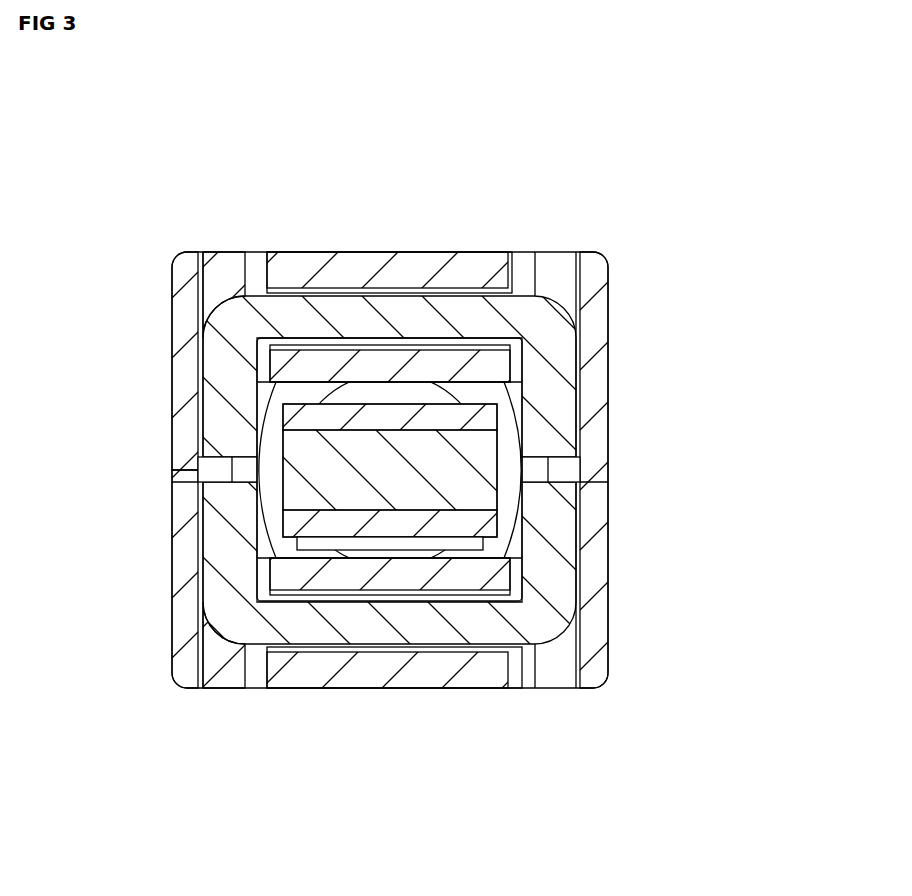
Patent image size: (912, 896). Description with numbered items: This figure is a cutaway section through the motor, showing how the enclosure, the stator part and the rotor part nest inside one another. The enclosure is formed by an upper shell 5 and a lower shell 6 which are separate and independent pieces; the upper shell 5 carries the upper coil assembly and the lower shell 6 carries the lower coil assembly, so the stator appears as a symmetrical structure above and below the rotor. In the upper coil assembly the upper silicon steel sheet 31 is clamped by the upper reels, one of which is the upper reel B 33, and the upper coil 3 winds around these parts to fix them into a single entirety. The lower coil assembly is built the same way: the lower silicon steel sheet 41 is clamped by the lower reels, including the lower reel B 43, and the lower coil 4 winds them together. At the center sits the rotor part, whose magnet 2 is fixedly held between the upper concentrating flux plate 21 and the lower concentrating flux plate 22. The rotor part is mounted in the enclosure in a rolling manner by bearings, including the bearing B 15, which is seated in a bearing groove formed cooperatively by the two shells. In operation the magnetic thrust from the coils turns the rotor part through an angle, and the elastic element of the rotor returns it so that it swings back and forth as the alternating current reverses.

The magnet 2 is at (402, 557).
The upper concentrating flux plate 21 is at (322, 418).
The lower concentrating flux plate 22 is at (457, 525).
The upper coil 3 is at (405, 273).
The upper silicon steel sheet 31 is at (548, 333).
The upper reel B 33 is at (225, 273).
The lower coil 4 is at (428, 672).
The lower silicon steel sheet 41 is at (362, 620).
The lower reel B 43 is at (225, 662).
The upper shell 5 is at (190, 305).
The lower shell 6 is at (185, 622).
The bearing B 15 is at (265, 472).